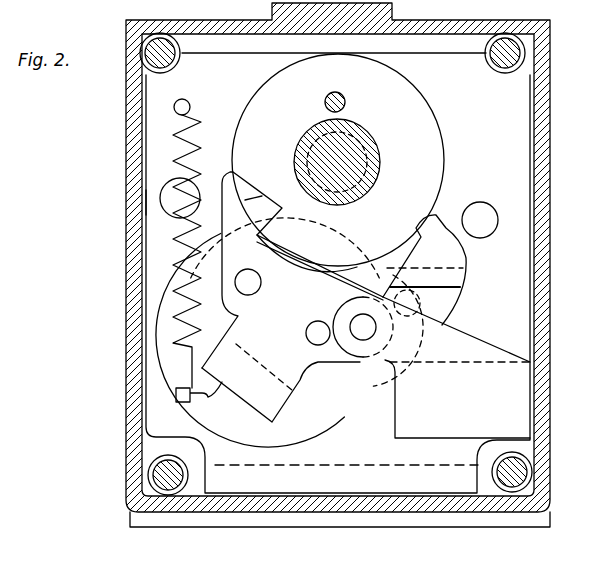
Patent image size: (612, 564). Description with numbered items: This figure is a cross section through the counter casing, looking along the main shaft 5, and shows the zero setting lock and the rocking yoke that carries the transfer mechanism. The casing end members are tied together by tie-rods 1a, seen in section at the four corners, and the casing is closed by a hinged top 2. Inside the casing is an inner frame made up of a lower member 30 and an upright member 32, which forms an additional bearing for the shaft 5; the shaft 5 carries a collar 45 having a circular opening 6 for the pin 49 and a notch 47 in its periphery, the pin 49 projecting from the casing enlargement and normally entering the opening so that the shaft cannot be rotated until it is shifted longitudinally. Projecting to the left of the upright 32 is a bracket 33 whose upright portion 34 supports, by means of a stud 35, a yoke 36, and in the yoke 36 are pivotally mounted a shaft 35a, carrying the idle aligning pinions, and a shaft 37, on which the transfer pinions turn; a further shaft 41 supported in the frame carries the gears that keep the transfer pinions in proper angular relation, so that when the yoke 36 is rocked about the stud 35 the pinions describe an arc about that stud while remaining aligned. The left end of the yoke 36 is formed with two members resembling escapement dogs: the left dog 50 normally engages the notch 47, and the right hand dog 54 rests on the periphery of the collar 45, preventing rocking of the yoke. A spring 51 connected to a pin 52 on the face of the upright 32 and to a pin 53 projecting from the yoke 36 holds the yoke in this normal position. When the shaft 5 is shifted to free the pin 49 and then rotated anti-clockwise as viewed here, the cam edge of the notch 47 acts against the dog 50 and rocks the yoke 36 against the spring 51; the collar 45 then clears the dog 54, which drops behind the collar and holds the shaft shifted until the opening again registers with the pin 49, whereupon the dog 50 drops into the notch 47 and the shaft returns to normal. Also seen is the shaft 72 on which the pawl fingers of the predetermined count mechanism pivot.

The tie-rods 1a is at (163, 45).
The hinged top 2 is at (416, 32).
The shaft 5 is at (378, 184).
The shaft bore 6 is at (372, 160).
The lower member 30 is at (305, 527).
The upright member 32 is at (534, 318).
The bracket 33 is at (422, 424).
The upright portion 34 is at (462, 340).
The stud 35 is at (360, 340).
The shaft 35a is at (316, 321).
The yoke 36 is at (305, 378).
The shaft 37 is at (250, 295).
The shaft 41 is at (450, 270).
The collar 45 is at (434, 137).
The notch 47 is at (248, 178).
The pin 49 is at (346, 103).
The left dog 50 is at (262, 196).
The spring 51 is at (140, 186).
The pin 52 is at (174, 106).
The pin 53 is at (176, 396).
The right hand dog 54 is at (463, 236).
The shaft 72 is at (163, 195).